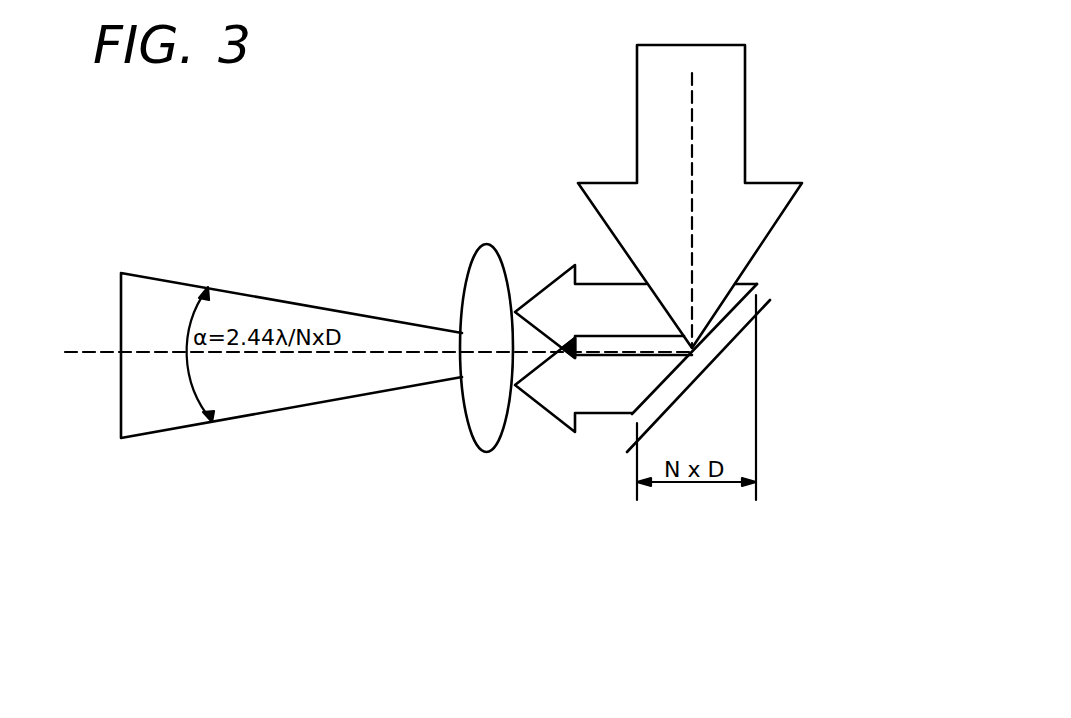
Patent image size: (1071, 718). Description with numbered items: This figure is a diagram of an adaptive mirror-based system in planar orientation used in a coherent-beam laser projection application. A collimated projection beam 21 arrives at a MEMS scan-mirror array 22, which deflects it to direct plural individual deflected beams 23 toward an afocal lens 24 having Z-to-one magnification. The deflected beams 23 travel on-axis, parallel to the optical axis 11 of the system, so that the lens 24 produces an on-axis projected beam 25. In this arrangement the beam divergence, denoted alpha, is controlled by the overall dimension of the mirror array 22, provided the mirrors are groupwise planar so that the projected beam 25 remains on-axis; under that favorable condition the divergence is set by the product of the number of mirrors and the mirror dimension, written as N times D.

The optical axis 11 is at (73, 358).
The collimated projection beam 21 is at (743, 89).
The MEMS scan-mirror array 22 is at (727, 335).
The deflected beams 23 is at (607, 296).
The afocal lens 24 is at (482, 415).
The on-axis projected beam 25 is at (285, 404).